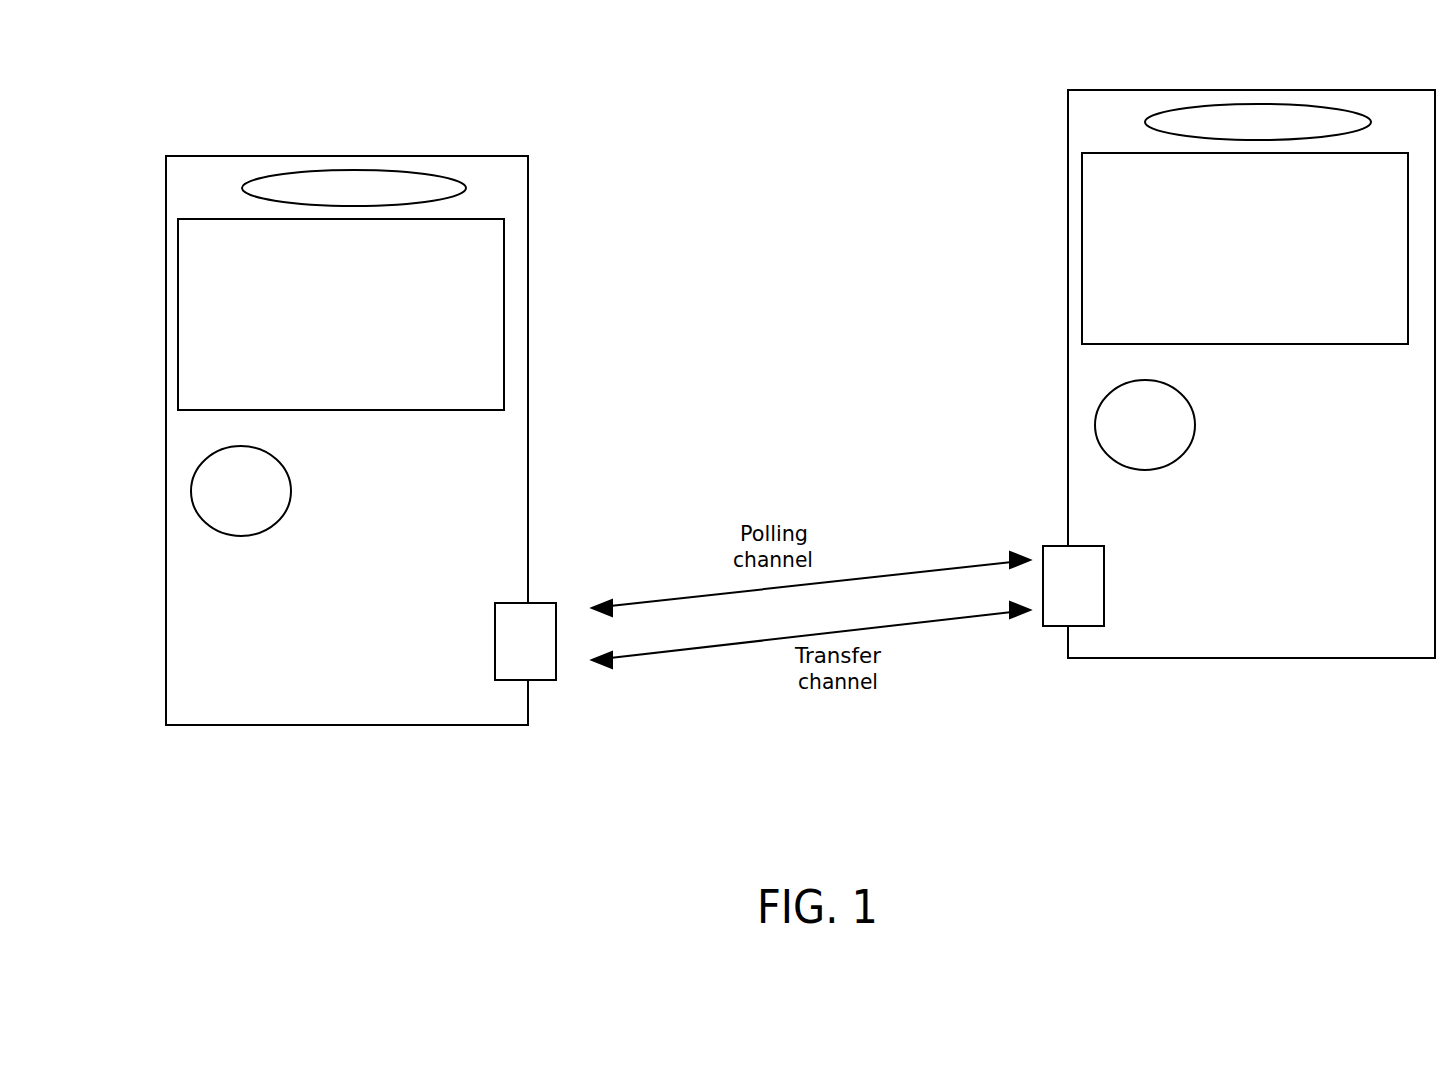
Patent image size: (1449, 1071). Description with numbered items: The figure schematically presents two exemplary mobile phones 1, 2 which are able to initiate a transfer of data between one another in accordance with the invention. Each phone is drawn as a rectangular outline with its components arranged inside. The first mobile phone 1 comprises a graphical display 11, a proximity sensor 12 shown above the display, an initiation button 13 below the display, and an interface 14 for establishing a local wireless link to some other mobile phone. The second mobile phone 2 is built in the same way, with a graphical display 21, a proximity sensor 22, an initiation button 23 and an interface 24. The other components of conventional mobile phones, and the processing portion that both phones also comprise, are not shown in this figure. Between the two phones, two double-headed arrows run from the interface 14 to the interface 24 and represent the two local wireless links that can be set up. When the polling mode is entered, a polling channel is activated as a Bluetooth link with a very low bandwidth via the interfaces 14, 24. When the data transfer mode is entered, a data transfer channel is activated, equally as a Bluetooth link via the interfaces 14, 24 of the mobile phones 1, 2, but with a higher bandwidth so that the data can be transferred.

The mobile phone 1 is at (338, 687).
The graphical display 11 is at (200, 283).
The proximity sensor 12 is at (352, 174).
The initiation button 13 is at (200, 490).
The interface 14 is at (533, 663).
The mobile phone 2 is at (1243, 628).
The graphical display 21 is at (1103, 226).
The proximity sensor 22 is at (1250, 110).
The initiation button 23 is at (1105, 428).
The interface 24 is at (1067, 607).